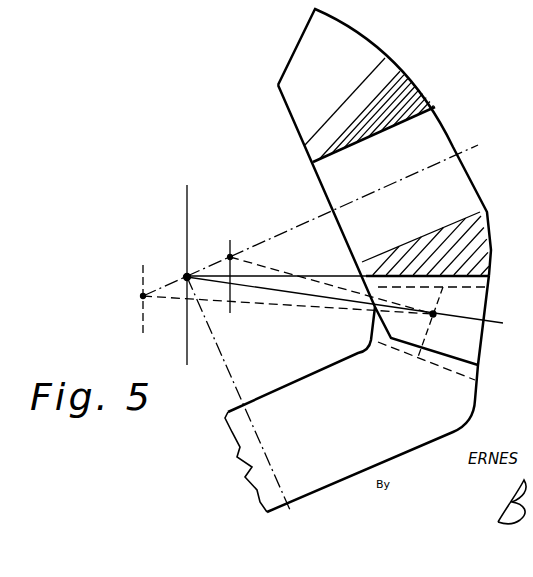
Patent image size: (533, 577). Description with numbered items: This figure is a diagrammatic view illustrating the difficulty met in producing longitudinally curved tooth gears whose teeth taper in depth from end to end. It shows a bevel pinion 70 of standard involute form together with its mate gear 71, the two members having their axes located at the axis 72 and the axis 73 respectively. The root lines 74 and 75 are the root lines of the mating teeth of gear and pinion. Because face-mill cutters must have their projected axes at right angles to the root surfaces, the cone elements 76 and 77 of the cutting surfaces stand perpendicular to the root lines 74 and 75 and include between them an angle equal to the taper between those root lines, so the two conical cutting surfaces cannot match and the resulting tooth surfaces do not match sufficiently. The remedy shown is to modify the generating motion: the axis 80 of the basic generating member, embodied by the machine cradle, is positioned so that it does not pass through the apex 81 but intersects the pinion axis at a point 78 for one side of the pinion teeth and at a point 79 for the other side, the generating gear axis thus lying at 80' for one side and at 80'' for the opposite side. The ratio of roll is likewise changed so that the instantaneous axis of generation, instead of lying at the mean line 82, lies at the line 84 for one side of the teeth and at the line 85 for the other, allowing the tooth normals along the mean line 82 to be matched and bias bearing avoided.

The bevel pinion 70 is at (415, 95).
The mate gear 71 is at (253, 466).
The axis of gear 72 is at (400, 180).
The axis of pinion 73 is at (231, 377).
The root line of gear tooth 74 is at (489, 276).
The root line of pinion tooth 75 is at (443, 370).
The cone element of gear cutter cutting surface 76 is at (432, 333).
The cone element of pinion cutter cutting surface 77 is at (439, 301).
The intersection point for one side of pinion teeth 78 is at (233, 252).
The intersection point for other side of pinion teeth 79 is at (141, 295).
The axis of basic generating member 80 is at (203, 275).
The axis of basic generating gear for one side of teeth 80' is at (211, 273).
The axis of basic generating gear for opposite side of teeth 80'' is at (119, 301).
The apex 81 is at (185, 275).
The instantaneous axis of generation / mean line 82 is at (308, 297).
The instantaneous axis of generation for one side of teeth 84 is at (282, 272).
The instantaneous axis of generation for opposite side of teeth 85 is at (263, 305).